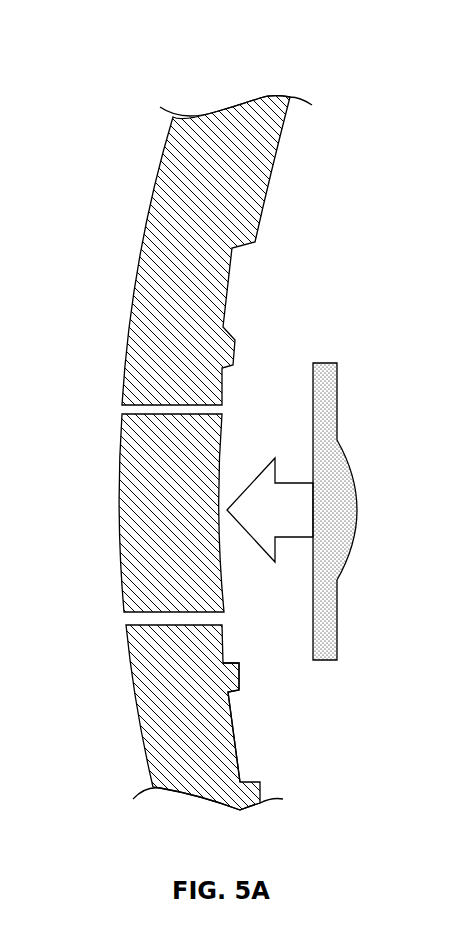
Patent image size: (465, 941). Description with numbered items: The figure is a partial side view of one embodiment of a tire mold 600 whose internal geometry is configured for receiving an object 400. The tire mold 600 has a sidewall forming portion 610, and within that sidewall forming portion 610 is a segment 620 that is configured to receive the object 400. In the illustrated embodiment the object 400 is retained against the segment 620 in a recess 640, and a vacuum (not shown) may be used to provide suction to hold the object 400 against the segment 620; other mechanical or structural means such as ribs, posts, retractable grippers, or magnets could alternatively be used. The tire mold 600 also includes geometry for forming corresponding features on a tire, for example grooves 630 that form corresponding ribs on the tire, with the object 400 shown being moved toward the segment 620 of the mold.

The tire mold 600 is at (121, 59).
The recess 640 is at (229, 384).
The segment 620 is at (120, 497).
The sidewall forming portion 610 is at (140, 733).
The grooves 630 is at (232, 735).
The object 400 is at (338, 418).